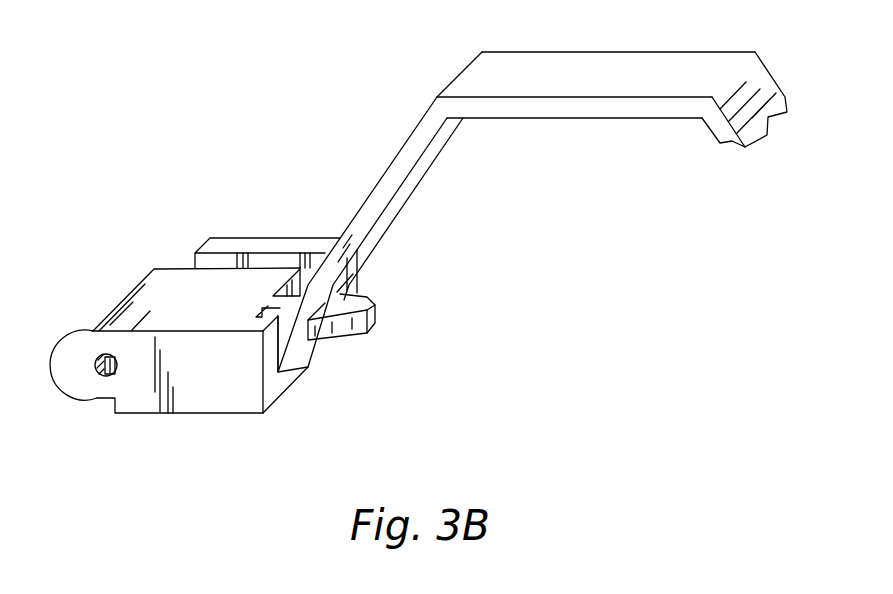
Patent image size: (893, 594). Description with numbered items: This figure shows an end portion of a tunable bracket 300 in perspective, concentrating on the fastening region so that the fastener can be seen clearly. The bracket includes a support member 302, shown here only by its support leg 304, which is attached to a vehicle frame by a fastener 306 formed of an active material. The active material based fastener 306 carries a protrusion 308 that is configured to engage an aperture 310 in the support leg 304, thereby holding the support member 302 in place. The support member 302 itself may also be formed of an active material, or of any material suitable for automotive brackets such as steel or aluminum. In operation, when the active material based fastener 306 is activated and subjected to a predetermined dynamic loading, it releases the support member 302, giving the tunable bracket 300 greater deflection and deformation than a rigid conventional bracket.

The tunable bracket 300 is at (158, 128).
The support member 302 is at (404, 141).
The support leg 304 is at (107, 378).
The fastener 306 is at (153, 293).
The protrusion 308 is at (376, 313).
The aperture 310 is at (305, 318).